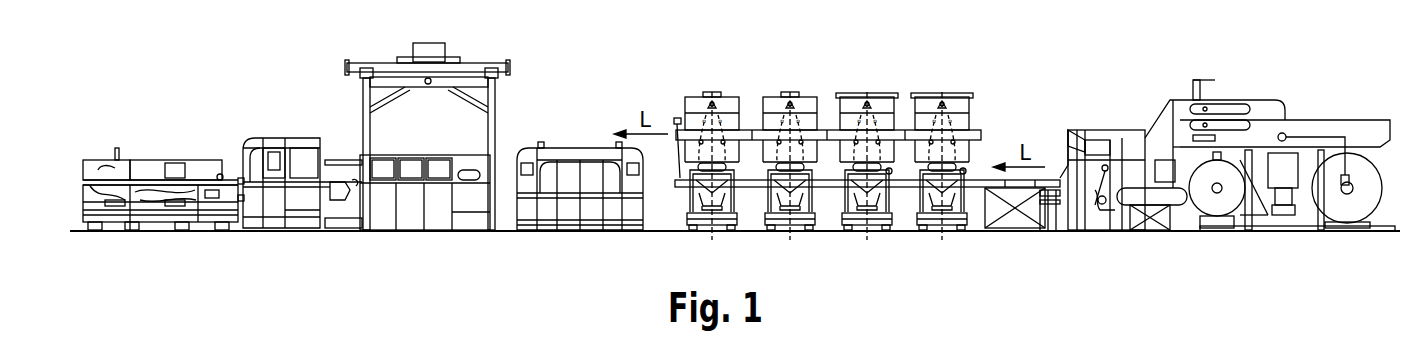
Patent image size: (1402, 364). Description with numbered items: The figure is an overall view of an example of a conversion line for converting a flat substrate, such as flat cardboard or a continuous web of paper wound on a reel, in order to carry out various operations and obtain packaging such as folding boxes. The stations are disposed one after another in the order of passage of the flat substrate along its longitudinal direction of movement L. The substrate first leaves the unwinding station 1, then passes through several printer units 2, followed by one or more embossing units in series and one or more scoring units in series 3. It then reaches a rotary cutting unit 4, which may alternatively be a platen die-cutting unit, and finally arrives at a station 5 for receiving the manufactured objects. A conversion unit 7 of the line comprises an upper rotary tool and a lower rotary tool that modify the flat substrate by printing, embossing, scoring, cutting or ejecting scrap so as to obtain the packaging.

The unwinding station 1 is at (1258, 98).
The printer units 2 is at (780, 97).
The scoring units 3 is at (578, 150).
The rotary cutting unit 4 is at (440, 158).
The station for receiving the manufactured objects 5 is at (172, 160).
The conversion unit 7 is at (572, 232).